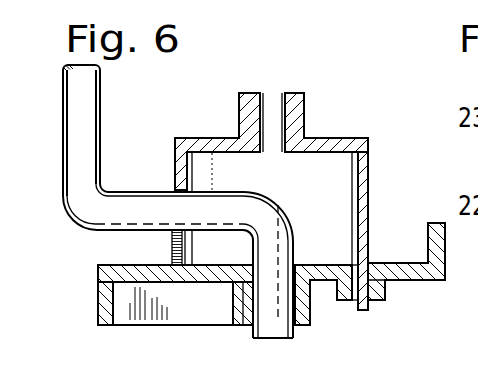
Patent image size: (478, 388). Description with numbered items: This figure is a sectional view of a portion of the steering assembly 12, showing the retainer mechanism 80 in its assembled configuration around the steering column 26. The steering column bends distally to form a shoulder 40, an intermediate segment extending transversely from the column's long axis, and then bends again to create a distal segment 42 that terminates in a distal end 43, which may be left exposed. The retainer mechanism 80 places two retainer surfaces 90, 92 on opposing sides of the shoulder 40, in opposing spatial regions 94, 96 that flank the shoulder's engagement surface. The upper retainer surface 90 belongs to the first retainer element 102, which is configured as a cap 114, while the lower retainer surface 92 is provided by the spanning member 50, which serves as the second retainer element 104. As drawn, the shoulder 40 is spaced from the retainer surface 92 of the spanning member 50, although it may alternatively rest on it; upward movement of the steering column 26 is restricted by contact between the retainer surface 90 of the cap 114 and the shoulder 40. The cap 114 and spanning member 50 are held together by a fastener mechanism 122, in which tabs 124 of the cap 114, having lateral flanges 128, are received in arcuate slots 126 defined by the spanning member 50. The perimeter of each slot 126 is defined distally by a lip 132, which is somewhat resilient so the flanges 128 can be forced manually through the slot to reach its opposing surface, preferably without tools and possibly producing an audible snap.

The steering assembly 12 is at (330, 54).
The steering column 26 is at (111, 102).
The shoulder 40 is at (128, 208).
The distal segment 42 is at (267, 287).
The distal end 43 is at (268, 338).
The spanning member 50 is at (88, 296).
The retainer mechanism 80 is at (338, 105).
The upper retainer surface 90 is at (197, 198).
The retainer surface 92 is at (180, 262).
The spatial region 94 is at (118, 172).
The spatial region 96 is at (85, 235).
The first retainer element 102 is at (218, 126).
The second retainer element 104 is at (162, 260).
The cap 114 is at (368, 167).
The fastener mechanism 122 is at (366, 338).
The tabs 124 is at (370, 285).
The slots 126 is at (362, 272).
The lateral flanges 128 is at (371, 306).
The lips 132 is at (343, 288).